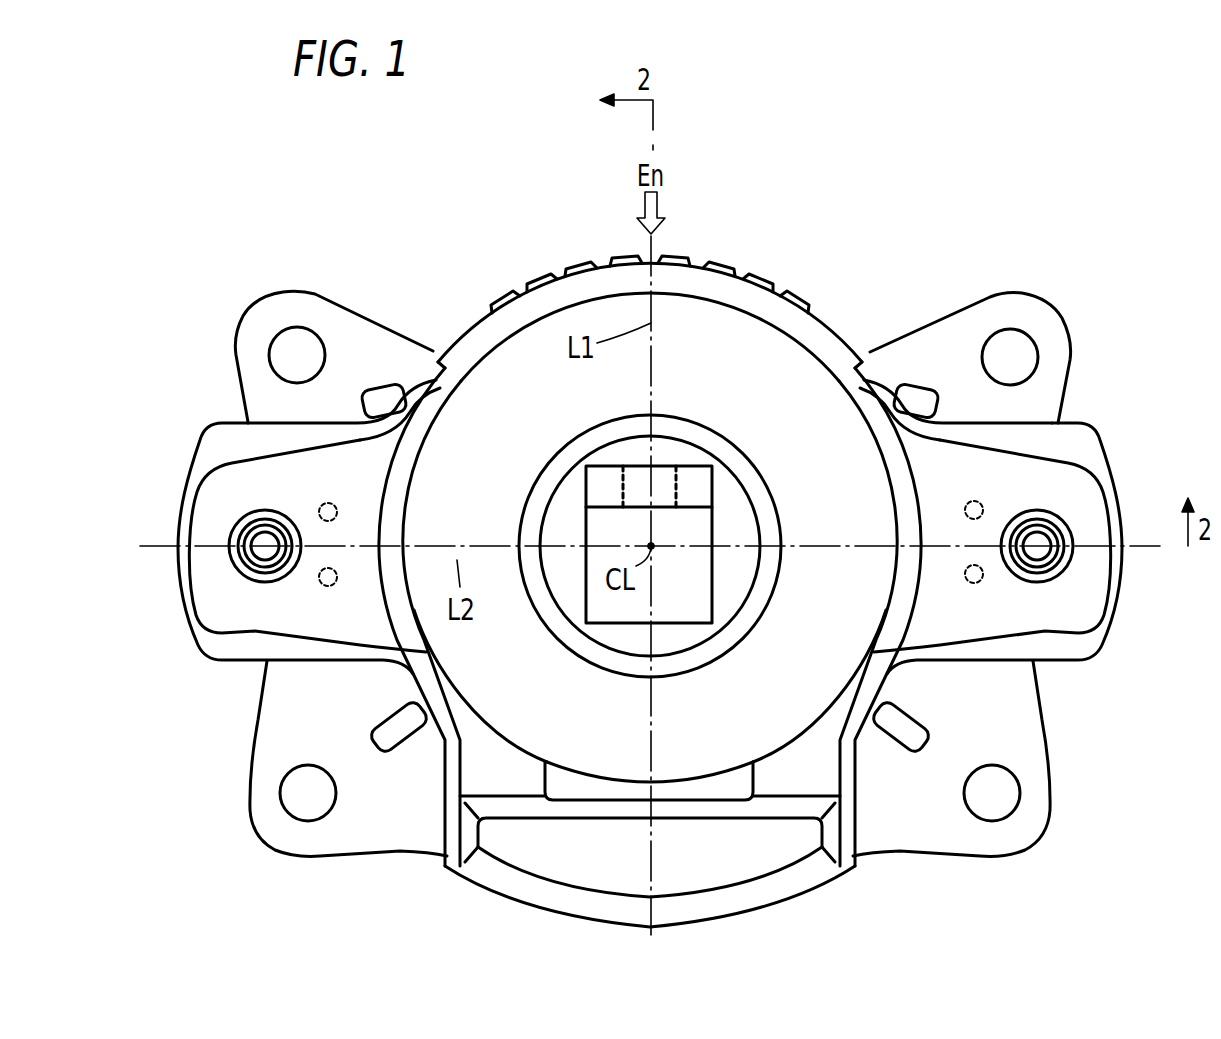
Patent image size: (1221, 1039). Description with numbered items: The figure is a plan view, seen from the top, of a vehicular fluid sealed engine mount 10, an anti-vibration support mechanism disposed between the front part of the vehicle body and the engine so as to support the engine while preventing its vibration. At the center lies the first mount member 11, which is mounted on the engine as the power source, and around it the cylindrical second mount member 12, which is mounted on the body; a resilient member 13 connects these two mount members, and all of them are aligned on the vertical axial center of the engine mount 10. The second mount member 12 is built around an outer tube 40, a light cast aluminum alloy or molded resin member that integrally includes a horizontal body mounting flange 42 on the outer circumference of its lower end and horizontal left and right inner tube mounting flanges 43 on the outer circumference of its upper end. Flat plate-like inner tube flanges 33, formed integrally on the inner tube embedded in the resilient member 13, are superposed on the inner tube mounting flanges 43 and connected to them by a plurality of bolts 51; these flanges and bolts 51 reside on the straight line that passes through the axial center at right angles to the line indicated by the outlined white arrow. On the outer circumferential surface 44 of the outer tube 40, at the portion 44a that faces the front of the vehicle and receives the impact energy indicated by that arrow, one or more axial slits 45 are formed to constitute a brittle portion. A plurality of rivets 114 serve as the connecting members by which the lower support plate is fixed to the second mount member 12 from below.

The vehicular fluid sealed engine mount 10 is at (238, 309).
The first mount member 11 is at (689, 474).
The second mount member 12 is at (880, 363).
The resilient member 13 is at (788, 378).
The inner tube flanges 33 is at (231, 485).
The outer tube 40 is at (613, 270).
The body mounting flange 42 is at (1055, 340).
The inner tube mounting flanges 43 is at (220, 433).
The outer circumferential surface 44 is at (488, 300).
The portion facing the front of the vehicle 44a is at (627, 256).
The axial slits 45 is at (597, 262).
The bolts 51 is at (258, 538).
The rivets 114 is at (324, 520).